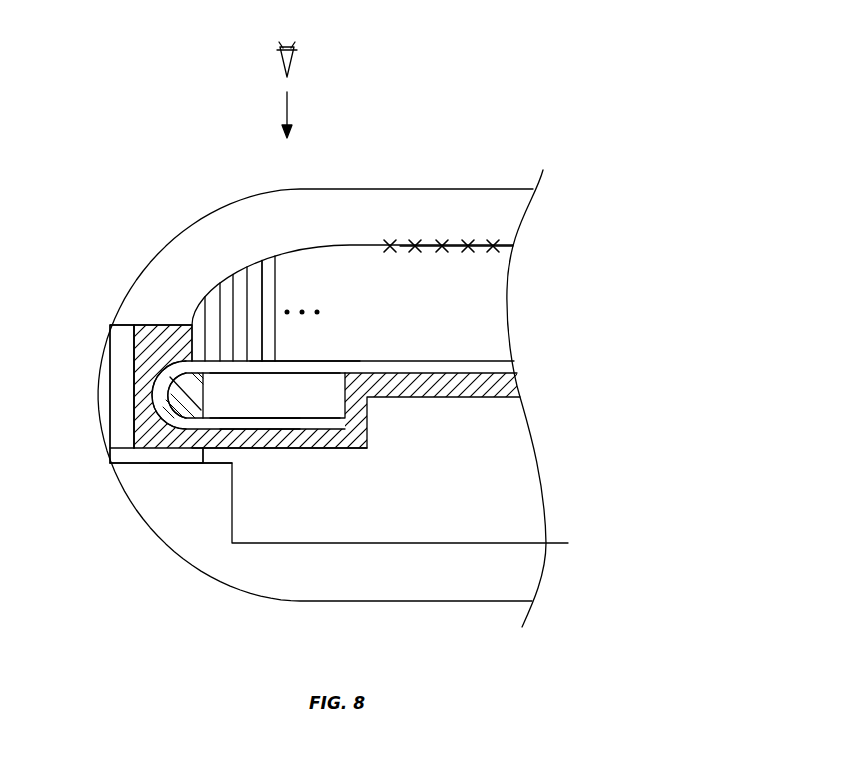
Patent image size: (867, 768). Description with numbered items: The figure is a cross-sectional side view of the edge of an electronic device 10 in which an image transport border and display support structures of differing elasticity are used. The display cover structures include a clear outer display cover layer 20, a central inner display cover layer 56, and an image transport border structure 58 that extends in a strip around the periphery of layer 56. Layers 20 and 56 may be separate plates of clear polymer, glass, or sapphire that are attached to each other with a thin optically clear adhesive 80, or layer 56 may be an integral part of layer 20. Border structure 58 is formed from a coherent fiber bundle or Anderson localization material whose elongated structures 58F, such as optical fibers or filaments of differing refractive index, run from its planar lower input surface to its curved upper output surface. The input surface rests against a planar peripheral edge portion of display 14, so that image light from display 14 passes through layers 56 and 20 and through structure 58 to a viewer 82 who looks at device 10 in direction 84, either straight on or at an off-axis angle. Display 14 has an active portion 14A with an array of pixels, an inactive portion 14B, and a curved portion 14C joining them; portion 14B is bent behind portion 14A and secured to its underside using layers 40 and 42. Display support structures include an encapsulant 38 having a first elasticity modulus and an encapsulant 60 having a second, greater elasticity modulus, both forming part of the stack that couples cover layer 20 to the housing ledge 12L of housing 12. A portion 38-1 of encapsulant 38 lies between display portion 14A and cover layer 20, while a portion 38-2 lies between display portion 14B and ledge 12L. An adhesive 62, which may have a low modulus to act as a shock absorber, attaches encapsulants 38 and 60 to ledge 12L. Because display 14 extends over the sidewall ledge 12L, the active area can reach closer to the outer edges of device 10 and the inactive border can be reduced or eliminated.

The electronic device 10 is at (172, 148).
The housing 12 is at (355, 585).
The housing ledge 12L is at (178, 467).
The display 14 is at (368, 365).
The active portion 14A is at (303, 360).
The inactive portion 14B is at (260, 425).
The curved portion 14C is at (152, 390).
The outer display cover layer 20 is at (430, 203).
The encapsulant 38 is at (338, 432).
The portion of encapsulant 38-1 is at (158, 325).
The portion of encapsulant 38-2 is at (222, 440).
The layer 40 is at (199, 391).
The layer 42 is at (290, 402).
The inner display cover layer 56 is at (487, 301).
The image transport border structure 58 is at (182, 313).
The elongated structures 58F is at (257, 301).
The encapsulant 60 is at (118, 357).
The adhesive 62 is at (138, 457).
The adhesive 80 is at (493, 244).
The viewer 82 is at (296, 56).
The direction 84 is at (292, 108).